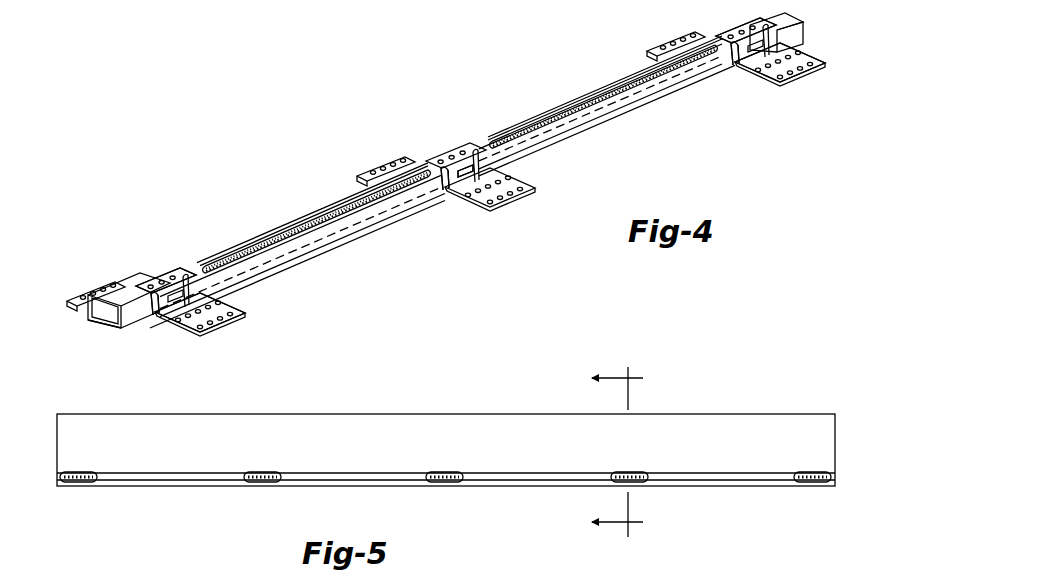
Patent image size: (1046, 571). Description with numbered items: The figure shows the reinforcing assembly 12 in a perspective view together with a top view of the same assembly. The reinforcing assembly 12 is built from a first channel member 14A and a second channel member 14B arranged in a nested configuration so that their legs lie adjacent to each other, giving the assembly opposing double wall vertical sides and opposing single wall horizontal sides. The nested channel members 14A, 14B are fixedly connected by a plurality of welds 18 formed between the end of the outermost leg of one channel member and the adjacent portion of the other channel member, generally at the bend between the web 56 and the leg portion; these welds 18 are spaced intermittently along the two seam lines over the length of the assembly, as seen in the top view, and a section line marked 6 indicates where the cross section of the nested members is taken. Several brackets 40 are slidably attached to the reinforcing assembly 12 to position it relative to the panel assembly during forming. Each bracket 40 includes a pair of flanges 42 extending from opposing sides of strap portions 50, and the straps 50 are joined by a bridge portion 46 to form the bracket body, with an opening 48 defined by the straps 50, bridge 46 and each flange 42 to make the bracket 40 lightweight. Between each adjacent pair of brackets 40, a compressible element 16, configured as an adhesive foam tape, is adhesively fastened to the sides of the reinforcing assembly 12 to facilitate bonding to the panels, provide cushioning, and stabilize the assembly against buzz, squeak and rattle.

In FIG. 4, the reinforcing assembly 12 is at (320, 172).
In FIG. 5, the reinforcing assembly 12 is at (420, 380).
In FIG. 4, the first channel member 14A is at (105, 318).
In FIG. 5, the first channel member 14A is at (748, 482).
In FIG. 4, the second channel member 14B is at (140, 315).
In FIG. 5, the second channel member 14B is at (750, 414).
In FIG. 4, the compressible element 16 is at (290, 219).
In FIG. 5, the weld 18 is at (82, 484).
In FIG. 4, the bracket 40 is at (242, 323).
In FIG. 4, the flange 42 is at (98, 286).
In FIG. 4, the bridge portion 46 is at (150, 276).
In FIG. 4, the opening 48 is at (462, 170).
In FIG. 4, the strap portion 50 is at (206, 282).
In FIG. 5, the section line 6- 6 is at (630, 453).
In FIG. 5, the web 56 is at (462, 568).